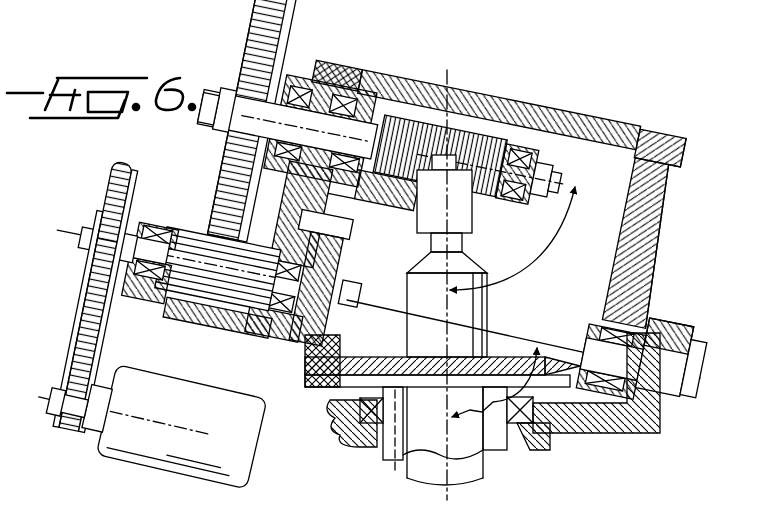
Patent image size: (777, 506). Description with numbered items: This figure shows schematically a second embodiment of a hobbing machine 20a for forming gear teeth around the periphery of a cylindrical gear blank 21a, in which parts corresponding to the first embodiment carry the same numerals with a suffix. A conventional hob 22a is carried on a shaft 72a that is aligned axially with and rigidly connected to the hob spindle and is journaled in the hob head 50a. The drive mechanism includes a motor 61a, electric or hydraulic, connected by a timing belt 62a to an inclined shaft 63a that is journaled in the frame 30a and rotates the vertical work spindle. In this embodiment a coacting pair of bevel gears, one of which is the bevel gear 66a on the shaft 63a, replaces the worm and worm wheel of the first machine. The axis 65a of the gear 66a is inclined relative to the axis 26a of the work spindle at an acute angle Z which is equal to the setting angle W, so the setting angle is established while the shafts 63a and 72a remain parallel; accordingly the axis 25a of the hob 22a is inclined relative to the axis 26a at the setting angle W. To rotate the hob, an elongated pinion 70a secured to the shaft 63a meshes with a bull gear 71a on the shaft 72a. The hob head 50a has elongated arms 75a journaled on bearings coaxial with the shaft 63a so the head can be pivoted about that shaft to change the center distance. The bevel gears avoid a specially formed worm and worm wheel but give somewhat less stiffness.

The hobbing machine 20a is at (577, 100).
The gear blank 21a is at (488, 155).
The hob 22a is at (417, 100).
The axis of the hob 25a is at (660, 200).
The axis of the work spindle 26a is at (445, 352).
The frame 30a is at (608, 432).
The hob head 50a is at (470, 85).
The motor 61a is at (137, 466).
The timing belt 62a is at (82, 310).
The shaft 63a is at (235, 320).
The axis of the shaft 65a is at (504, 341).
The bevel gear 66a is at (350, 262).
The elongated pinion 70a is at (188, 226).
The bull gear 71a is at (258, 42).
The shaft 72a is at (328, 118).
The elongated arms 75a is at (650, 298).
The setting angle W is at (530, 262).
The angle Z is at (494, 399).